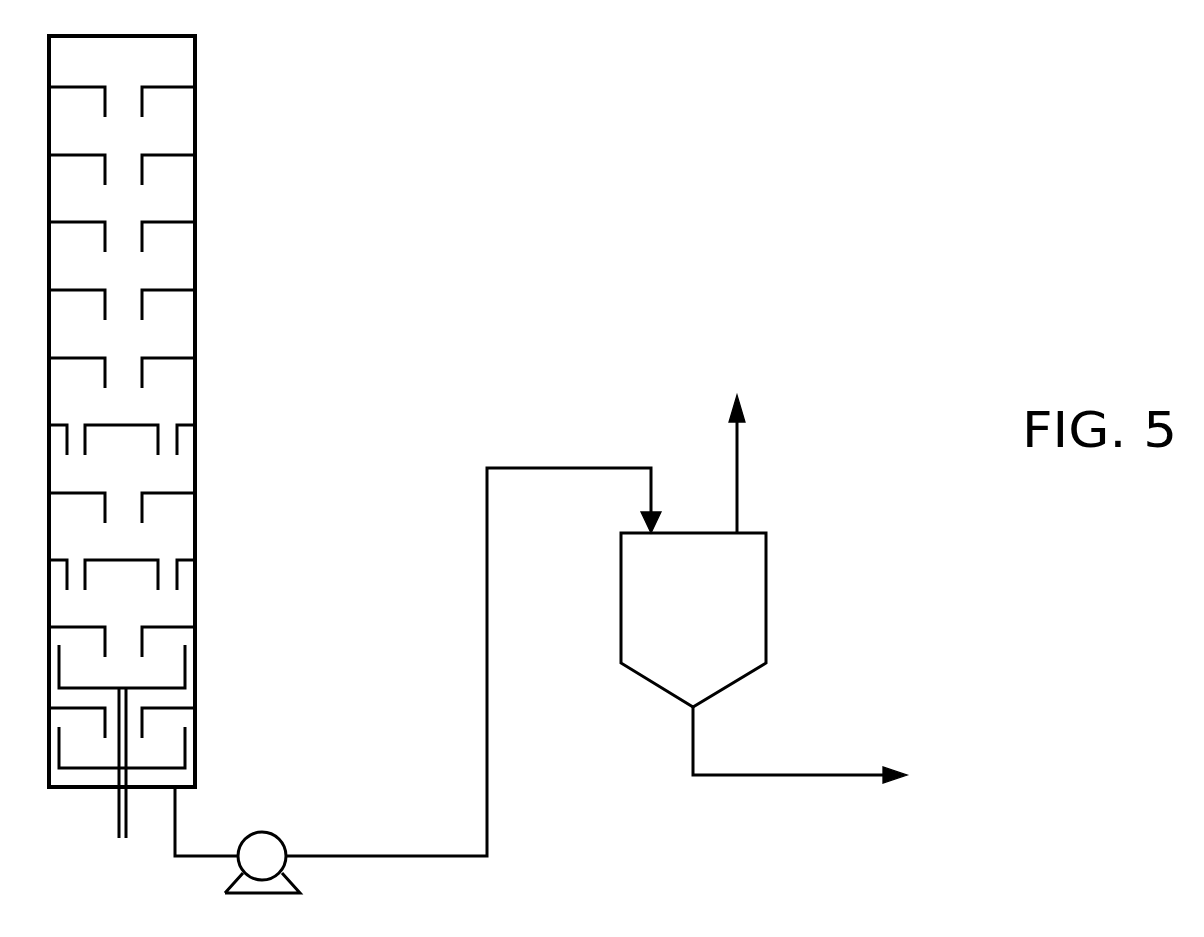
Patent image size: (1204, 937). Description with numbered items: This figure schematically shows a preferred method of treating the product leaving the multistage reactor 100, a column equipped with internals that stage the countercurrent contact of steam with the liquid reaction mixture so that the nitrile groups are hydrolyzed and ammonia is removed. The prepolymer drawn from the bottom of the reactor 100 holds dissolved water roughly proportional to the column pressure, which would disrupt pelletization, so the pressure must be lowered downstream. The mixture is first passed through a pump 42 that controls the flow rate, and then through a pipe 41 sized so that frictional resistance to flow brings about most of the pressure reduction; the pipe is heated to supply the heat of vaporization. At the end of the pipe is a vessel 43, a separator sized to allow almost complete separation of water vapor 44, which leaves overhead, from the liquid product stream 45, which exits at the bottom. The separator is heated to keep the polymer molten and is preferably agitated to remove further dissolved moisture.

The multistage reactor 100 is at (286, 106).
The pipe 41 is at (420, 857).
The pump 42 is at (262, 832).
The vessel 43 is at (620, 608).
The water vapor 44 is at (740, 470).
The liquid product stream 45 is at (833, 770).